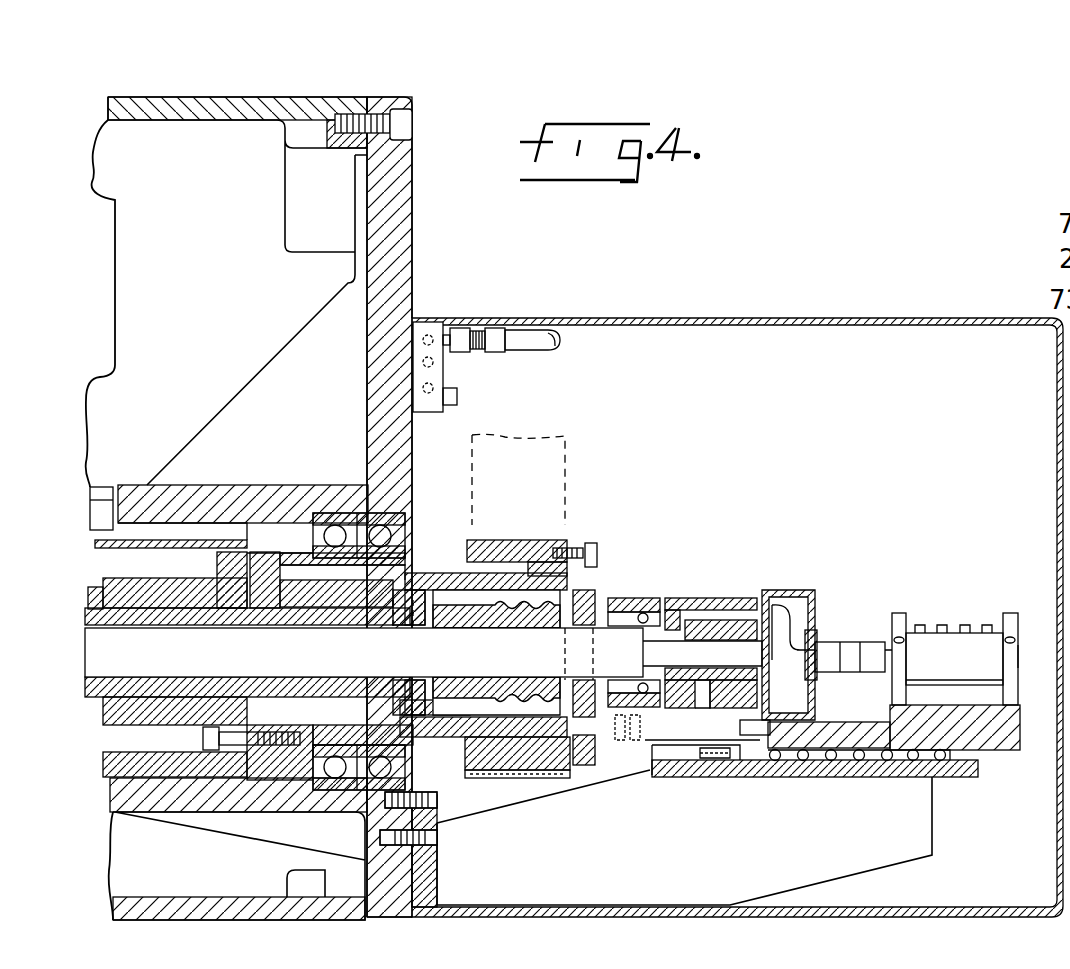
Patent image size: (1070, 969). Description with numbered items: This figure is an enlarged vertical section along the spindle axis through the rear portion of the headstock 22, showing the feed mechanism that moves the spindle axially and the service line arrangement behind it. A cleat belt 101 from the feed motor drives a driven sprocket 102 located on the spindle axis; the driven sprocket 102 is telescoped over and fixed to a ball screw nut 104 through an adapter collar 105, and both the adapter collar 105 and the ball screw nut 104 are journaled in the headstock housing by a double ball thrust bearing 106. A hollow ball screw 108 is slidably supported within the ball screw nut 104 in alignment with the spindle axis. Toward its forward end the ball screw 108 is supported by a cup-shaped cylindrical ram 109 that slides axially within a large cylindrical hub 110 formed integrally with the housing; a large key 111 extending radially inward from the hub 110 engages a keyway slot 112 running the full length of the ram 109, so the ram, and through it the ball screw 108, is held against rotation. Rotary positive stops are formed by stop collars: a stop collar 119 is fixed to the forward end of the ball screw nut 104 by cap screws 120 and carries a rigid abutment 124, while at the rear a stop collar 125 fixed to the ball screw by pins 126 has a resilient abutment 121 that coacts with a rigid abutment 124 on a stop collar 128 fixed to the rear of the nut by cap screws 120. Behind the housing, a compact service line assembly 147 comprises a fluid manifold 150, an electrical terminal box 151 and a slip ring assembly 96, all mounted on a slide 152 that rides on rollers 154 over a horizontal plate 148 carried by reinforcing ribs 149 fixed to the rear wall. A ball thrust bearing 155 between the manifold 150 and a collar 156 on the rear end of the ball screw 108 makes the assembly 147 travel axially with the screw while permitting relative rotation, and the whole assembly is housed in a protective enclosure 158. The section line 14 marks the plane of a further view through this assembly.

The headstock 22 is at (276, 82).
The section line 14- 14 is at (1028, 790).
The slip ring assembly 96 is at (968, 630).
The cleat belt 101 is at (566, 432).
The driven sprocket 102 is at (540, 540).
The ball screw nut 104 is at (287, 600).
The adapter collar 105 is at (492, 733).
The double ball thrust bearing 106 is at (371, 517).
The hollow ball screw 108 is at (545, 683).
The cup-shaped cylindrical ram 109 is at (151, 776).
The cylindrical hub 110 is at (262, 805).
The key 111 is at (102, 490).
The keyway slot 112 is at (186, 526).
The stop collar 119 is at (96, 592).
The cap screws 120 is at (100, 700).
The resilient abutment 121 is at (557, 607).
The rigid abutment 124 is at (419, 626).
The stop collar 125 is at (583, 765).
The pins 126 is at (581, 596).
The stop collar 128 is at (400, 602).
The service line assembly 147 is at (887, 575).
The horizontal plate 148 is at (836, 777).
The reinforcing ribs 149 is at (875, 863).
The fluid manifold 150 is at (727, 605).
The electrical terminal box 151 is at (798, 592).
The slide 152 is at (860, 740).
The rollers 154 is at (912, 765).
The ball thrust bearing 155 is at (645, 600).
The collar 156 is at (634, 602).
The protective enclosure 158 is at (879, 298).